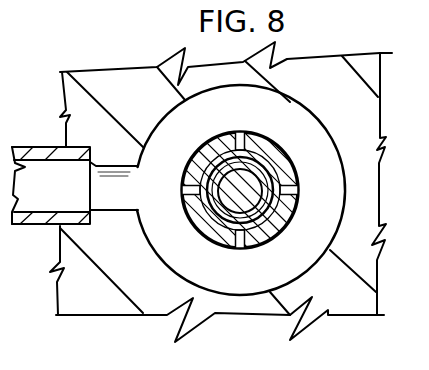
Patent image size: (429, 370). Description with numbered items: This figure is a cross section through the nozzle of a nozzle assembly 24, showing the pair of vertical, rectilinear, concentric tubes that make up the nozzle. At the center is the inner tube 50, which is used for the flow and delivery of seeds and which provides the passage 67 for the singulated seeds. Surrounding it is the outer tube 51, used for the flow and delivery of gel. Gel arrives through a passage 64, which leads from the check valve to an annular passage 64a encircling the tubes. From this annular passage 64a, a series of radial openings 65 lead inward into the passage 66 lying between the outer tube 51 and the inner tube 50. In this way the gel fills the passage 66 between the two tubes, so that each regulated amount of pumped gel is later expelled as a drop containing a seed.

The nozzle assembly 24 is at (130, 100).
The inner tube 50 is at (228, 148).
The outer tube 51 is at (288, 177).
The passage 64 is at (118, 193).
The annular passage 64a is at (283, 116).
The radial openings 65 is at (290, 228).
The passage between outer and inner tubes 66 is at (203, 229).
The passage for singulated seeds 67 is at (252, 201).